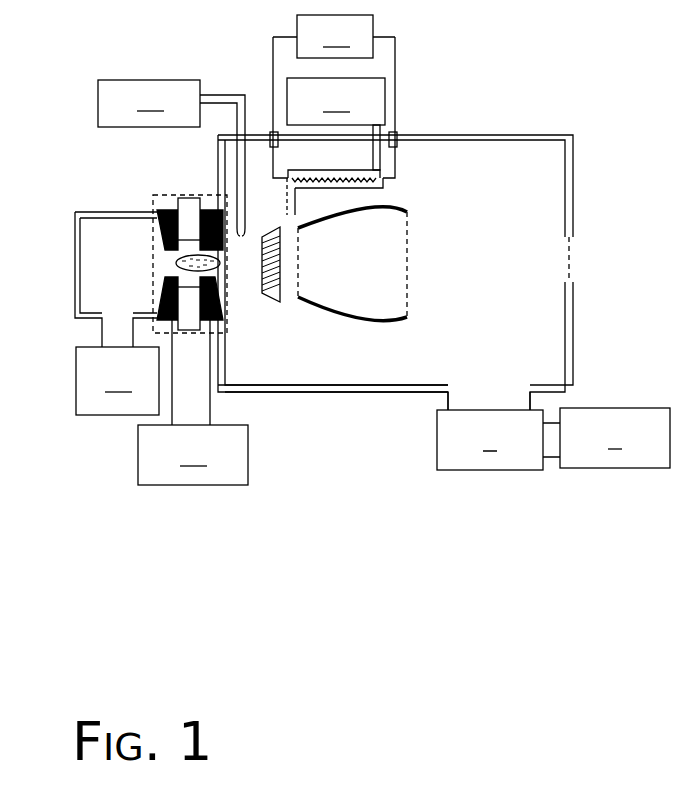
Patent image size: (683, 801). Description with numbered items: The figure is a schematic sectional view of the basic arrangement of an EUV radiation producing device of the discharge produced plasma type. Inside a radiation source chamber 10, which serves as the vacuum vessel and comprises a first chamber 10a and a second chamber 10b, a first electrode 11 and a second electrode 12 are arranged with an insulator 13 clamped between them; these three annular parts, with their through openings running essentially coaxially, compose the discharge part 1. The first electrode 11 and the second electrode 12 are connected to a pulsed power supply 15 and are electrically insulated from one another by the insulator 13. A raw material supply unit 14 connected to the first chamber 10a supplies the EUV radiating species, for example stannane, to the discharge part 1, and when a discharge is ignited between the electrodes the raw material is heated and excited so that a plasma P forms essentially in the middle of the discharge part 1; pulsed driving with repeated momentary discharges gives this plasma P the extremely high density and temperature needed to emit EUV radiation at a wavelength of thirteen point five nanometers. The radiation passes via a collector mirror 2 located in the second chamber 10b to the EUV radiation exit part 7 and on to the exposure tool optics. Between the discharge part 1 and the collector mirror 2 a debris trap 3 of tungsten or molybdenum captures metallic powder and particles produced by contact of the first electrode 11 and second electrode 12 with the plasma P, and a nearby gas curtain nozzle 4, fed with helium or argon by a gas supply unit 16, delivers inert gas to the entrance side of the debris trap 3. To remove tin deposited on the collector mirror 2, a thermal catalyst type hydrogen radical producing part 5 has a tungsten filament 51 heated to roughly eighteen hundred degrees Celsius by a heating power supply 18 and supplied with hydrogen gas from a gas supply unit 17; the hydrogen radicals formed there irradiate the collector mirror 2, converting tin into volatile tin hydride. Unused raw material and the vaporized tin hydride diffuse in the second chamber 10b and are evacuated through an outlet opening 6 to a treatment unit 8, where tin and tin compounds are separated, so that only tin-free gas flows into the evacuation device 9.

The discharge part 1 is at (196, 306).
The collector mirror 2 is at (397, 322).
The debris trap 3 is at (282, 303).
The gas curtain nozzle 4 is at (236, 232).
The hydrogen radical producing part 5 is at (383, 186).
The tungsten filament 51 is at (360, 172).
The outlet opening 6 is at (490, 388).
The EUV radiation exit part 7 is at (573, 282).
The treatment unit 8 is at (498, 440).
The evacuation device 9 is at (615, 438).
The radiation source chamber 10 is at (460, 133).
The first chamber 10a is at (72, 275).
The second chamber 10b is at (280, 397).
The first electrode 11 is at (163, 212).
The second electrode 12 is at (225, 300).
The insulator 13 is at (187, 197).
The raw material supply unit 14 is at (117, 381).
The pulsed power supply 15 is at (193, 455).
The gas supply unit 16 is at (149, 103).
The gas supply unit 17 is at (336, 101).
The heating power supply 18 is at (335, 36).
The plasma P is at (176, 258).